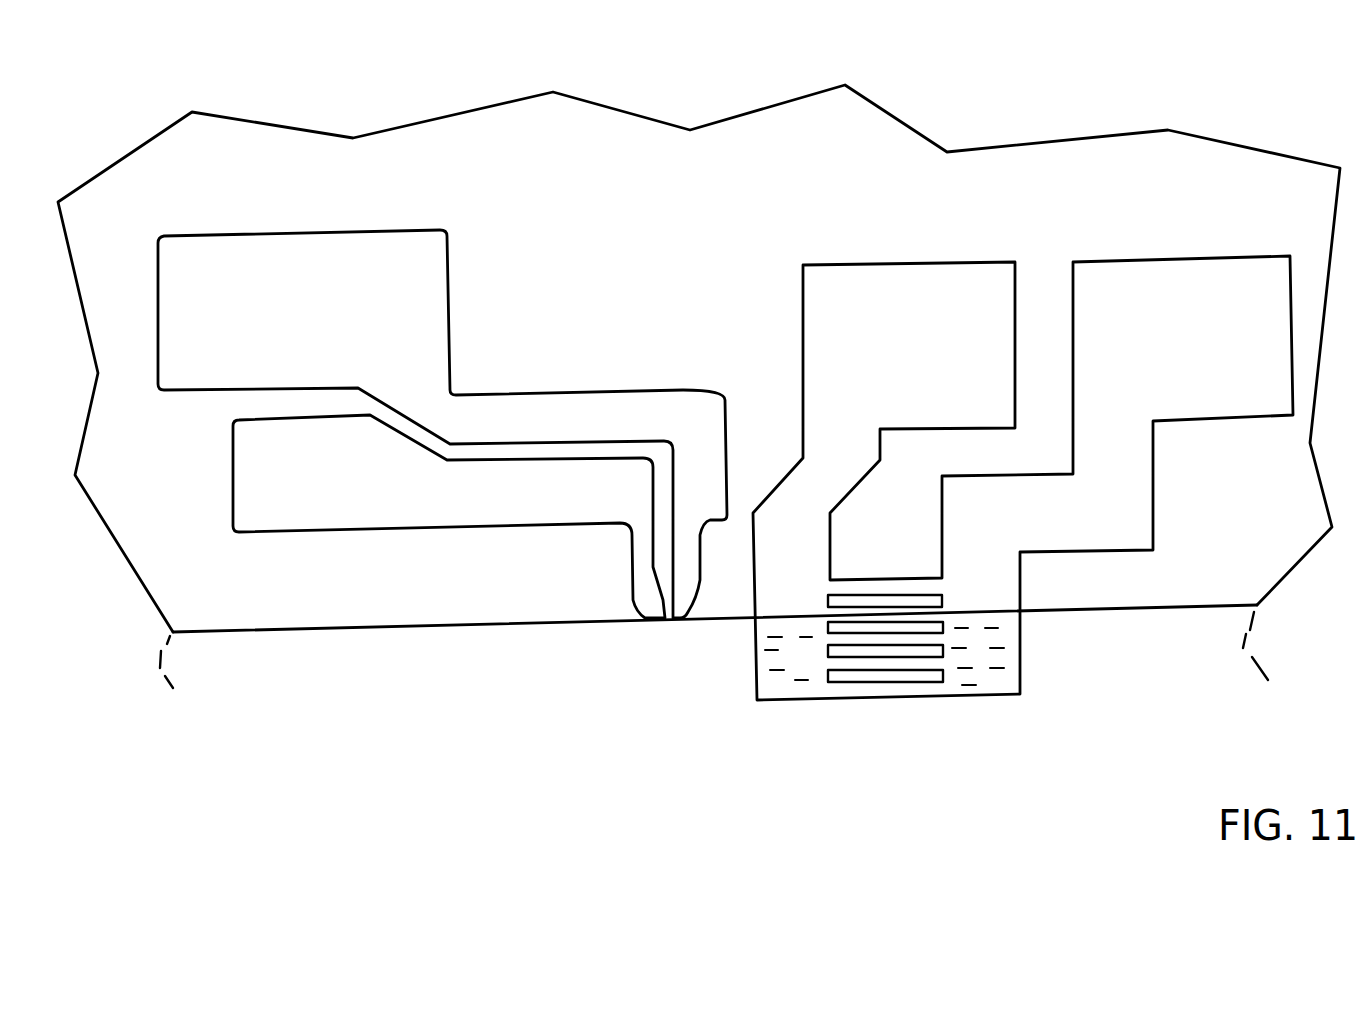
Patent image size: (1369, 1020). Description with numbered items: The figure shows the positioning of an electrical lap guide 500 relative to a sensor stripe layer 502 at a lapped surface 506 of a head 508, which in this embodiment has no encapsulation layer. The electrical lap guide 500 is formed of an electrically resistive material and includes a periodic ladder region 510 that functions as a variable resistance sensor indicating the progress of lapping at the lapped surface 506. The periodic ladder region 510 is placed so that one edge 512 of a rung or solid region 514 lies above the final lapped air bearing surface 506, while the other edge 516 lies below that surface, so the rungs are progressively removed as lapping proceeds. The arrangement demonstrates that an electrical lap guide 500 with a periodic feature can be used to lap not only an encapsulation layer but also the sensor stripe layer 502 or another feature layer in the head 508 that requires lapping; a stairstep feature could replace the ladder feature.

The electrical lap guide 500 is at (1158, 497).
The sensor stripe layer 502 is at (667, 605).
The lapped surface 506 is at (498, 627).
The head 508 is at (672, 232).
The periodic ladder region 510 is at (962, 709).
The edge 512 is at (840, 620).
The rung 514 is at (823, 612).
The edge 516 is at (843, 620).